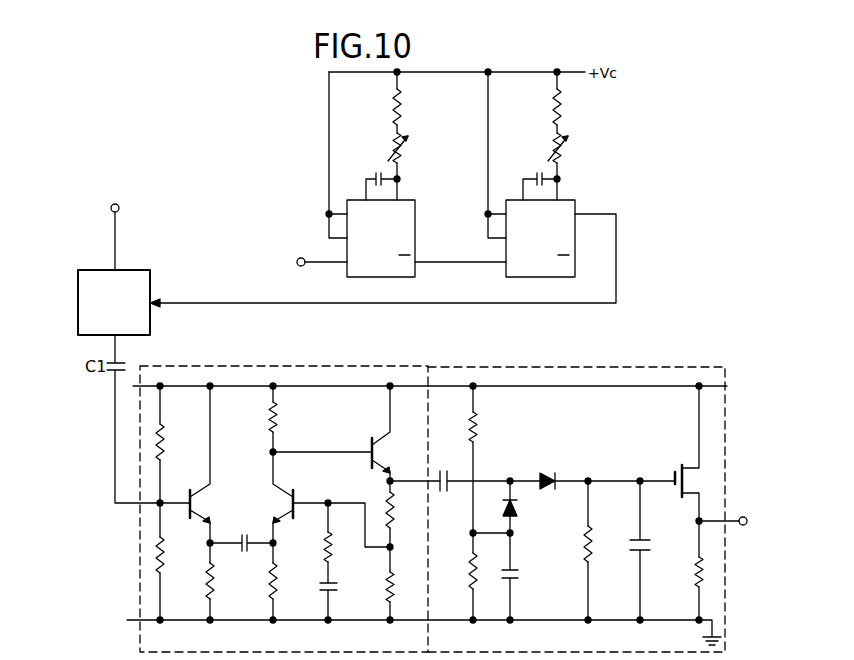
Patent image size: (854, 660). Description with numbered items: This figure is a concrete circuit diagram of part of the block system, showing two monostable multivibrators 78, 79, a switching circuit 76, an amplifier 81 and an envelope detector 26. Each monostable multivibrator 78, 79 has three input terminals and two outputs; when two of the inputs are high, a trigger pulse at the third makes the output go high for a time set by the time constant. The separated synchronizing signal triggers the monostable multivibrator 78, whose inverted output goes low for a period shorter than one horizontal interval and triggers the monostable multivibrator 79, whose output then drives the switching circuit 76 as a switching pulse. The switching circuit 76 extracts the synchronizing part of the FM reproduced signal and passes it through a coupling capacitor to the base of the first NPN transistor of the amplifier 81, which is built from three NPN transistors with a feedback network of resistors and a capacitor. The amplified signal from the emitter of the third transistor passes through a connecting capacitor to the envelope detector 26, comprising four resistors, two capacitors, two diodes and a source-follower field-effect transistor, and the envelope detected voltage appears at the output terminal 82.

The envelope detector 26 is at (543, 365).
The switching circuit 76 is at (132, 270).
The monostable multivibrator 78 is at (407, 196).
The monostable multivibrator 79 is at (571, 196).
The amplifier 81 is at (223, 365).
The output terminal 82 is at (742, 517).